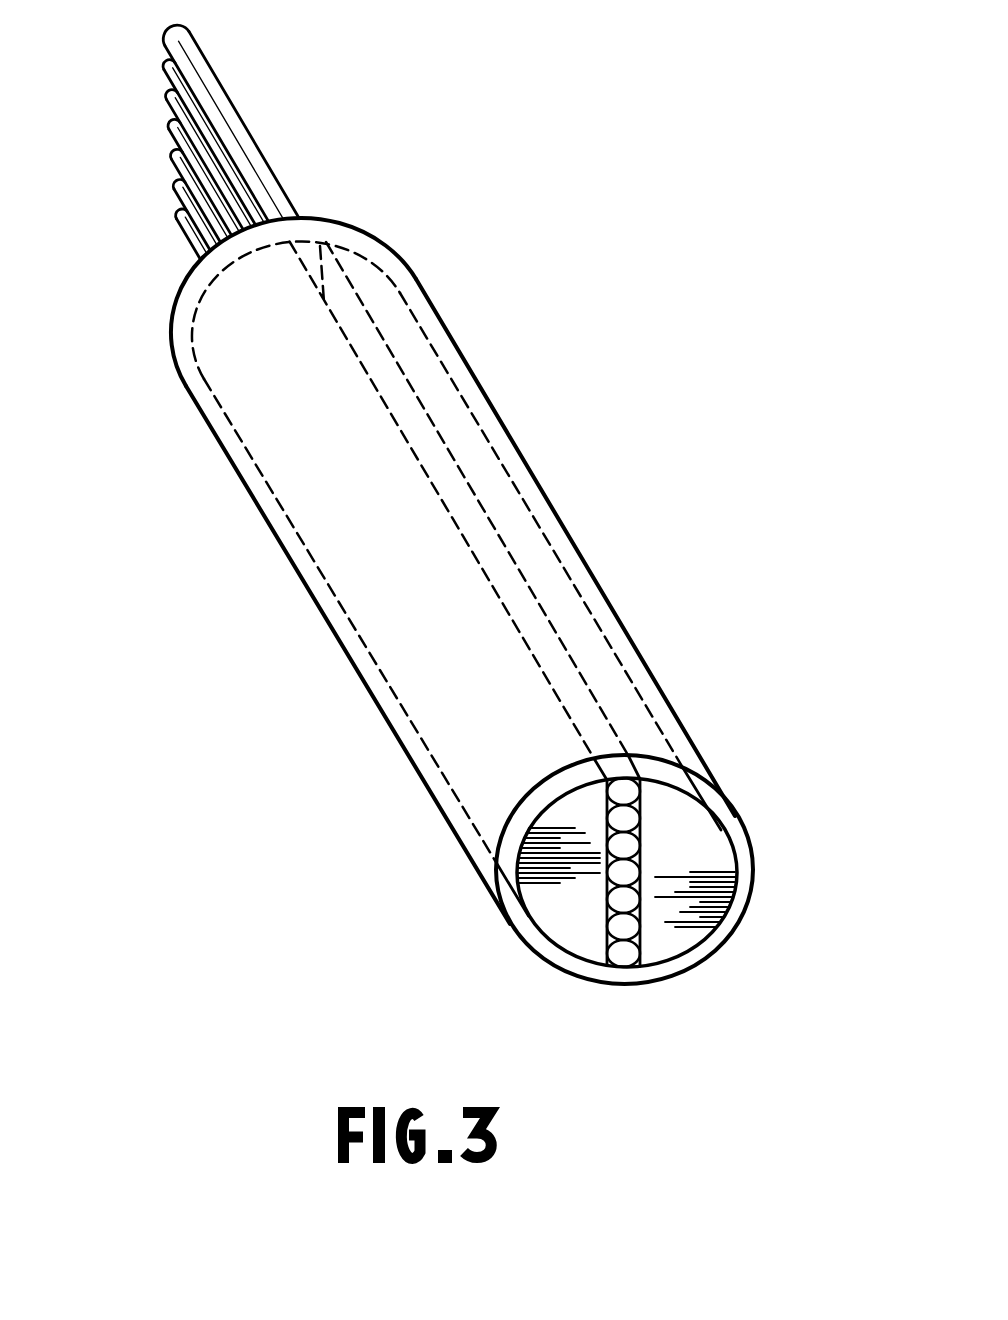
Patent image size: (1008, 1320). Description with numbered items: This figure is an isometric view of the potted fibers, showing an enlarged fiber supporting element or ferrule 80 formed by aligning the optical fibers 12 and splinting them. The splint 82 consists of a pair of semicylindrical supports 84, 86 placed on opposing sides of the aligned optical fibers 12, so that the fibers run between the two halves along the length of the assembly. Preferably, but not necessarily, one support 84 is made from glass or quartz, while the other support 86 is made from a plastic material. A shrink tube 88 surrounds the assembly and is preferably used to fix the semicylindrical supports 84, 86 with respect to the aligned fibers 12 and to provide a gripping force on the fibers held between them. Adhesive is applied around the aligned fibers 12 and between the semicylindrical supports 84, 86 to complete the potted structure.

The optical fibers 12 is at (162, 116).
The ferrule 80 is at (693, 367).
The splint 82 is at (345, 575).
The semicylindrical support 84 is at (562, 923).
The semicylindrical support 86 is at (680, 937).
The shrink tube 88 is at (752, 862).